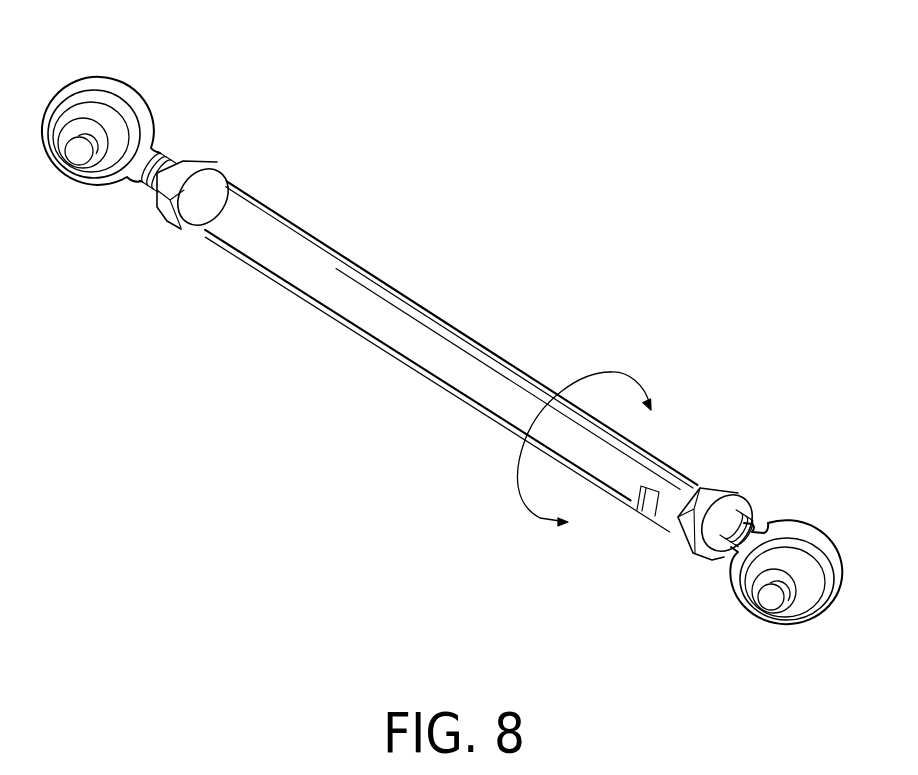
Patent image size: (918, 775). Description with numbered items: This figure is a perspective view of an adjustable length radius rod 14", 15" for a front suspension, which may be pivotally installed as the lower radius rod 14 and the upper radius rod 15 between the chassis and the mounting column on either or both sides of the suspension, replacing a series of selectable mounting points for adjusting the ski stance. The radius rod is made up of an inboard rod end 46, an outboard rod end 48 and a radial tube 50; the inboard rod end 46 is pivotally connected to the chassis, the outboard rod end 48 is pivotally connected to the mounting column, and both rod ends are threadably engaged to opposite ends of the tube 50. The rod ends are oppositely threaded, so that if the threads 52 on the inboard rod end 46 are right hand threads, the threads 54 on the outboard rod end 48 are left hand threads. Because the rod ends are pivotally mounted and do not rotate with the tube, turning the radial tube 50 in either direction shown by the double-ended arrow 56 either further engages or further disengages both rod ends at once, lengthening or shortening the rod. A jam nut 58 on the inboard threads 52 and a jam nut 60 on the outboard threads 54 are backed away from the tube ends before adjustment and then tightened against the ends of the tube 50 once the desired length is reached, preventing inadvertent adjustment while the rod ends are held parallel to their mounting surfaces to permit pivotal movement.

The lower radius rod 14 is at (448, 341).
The upper radius rod 15 is at (448, 341).
The inboard rod end 46 is at (121, 97).
The outboard rod end 48 is at (812, 543).
The radial tube 50 is at (462, 328).
The threads on inboard rod end 52 is at (170, 152).
The threads on outboard rod end 54 is at (713, 560).
The double-ended arrow 56 is at (610, 372).
The jam nut 58 is at (207, 160).
The jam nut 60 is at (720, 493).